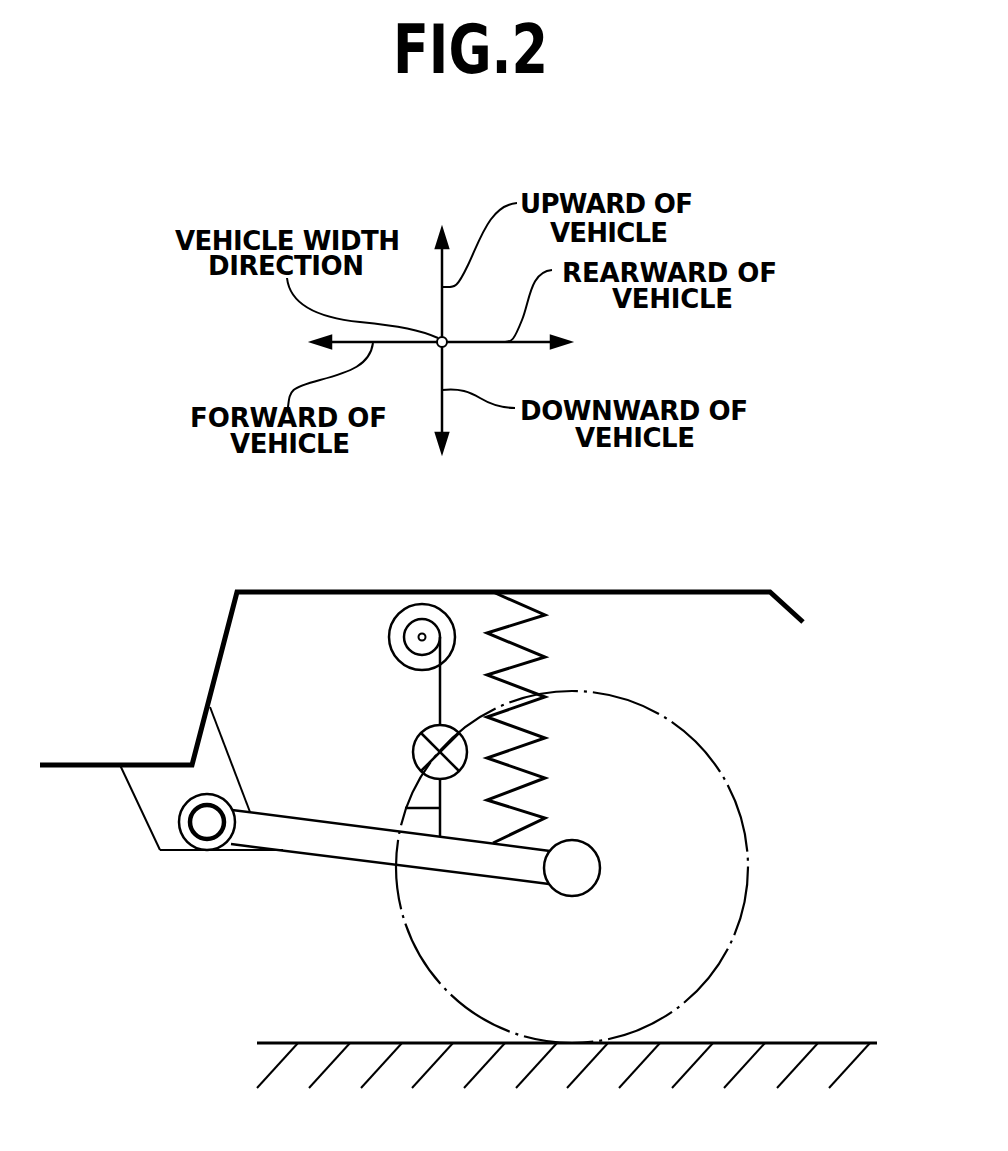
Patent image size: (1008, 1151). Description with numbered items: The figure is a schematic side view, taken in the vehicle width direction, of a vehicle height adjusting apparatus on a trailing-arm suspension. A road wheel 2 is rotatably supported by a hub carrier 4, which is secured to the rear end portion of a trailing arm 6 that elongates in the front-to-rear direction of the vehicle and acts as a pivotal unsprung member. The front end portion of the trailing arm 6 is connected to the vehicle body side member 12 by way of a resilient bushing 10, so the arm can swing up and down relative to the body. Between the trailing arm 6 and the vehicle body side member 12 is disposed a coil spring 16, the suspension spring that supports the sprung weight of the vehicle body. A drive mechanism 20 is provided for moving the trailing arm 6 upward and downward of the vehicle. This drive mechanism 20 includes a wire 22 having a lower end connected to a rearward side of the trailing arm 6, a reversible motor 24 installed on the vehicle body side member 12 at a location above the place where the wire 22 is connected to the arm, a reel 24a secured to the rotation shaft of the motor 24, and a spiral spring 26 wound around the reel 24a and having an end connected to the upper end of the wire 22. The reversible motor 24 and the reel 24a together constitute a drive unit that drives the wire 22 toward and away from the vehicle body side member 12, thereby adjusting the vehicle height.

The road wheel 2 is at (747, 905).
The hub carrier 4 is at (570, 870).
The trailing arm 6 is at (363, 847).
The resilient bushing 10 is at (205, 827).
The vehicle body side member 12 is at (215, 670).
The coil spring 16 is at (530, 688).
The drive mechanism 20 is at (462, 668).
The wire 22 is at (405, 808).
The reversible motor 24 is at (422, 607).
The reel 24a is at (405, 630).
The spiral spring 26 is at (440, 693).